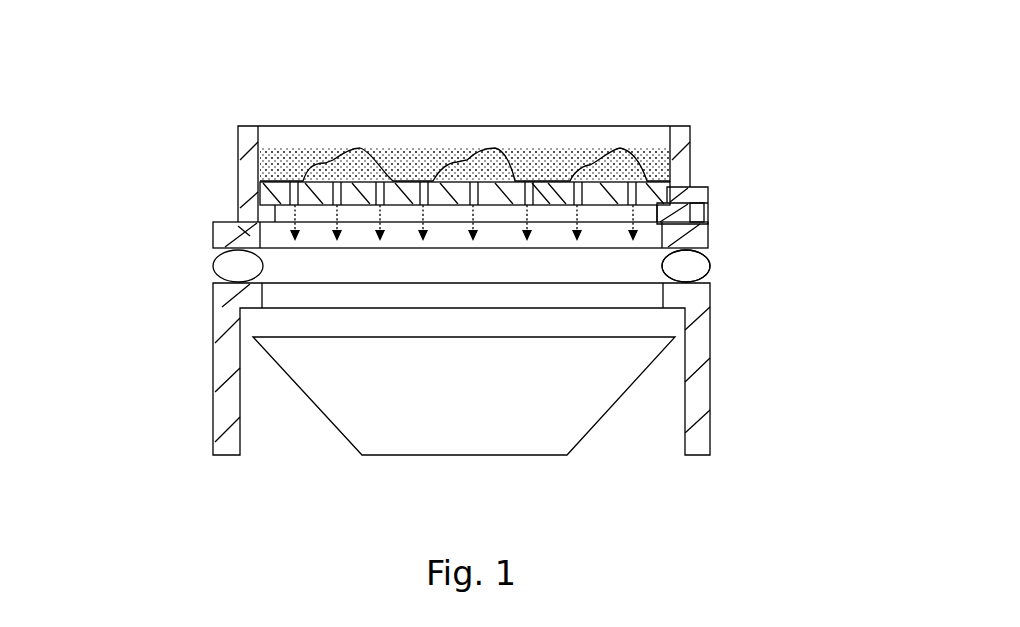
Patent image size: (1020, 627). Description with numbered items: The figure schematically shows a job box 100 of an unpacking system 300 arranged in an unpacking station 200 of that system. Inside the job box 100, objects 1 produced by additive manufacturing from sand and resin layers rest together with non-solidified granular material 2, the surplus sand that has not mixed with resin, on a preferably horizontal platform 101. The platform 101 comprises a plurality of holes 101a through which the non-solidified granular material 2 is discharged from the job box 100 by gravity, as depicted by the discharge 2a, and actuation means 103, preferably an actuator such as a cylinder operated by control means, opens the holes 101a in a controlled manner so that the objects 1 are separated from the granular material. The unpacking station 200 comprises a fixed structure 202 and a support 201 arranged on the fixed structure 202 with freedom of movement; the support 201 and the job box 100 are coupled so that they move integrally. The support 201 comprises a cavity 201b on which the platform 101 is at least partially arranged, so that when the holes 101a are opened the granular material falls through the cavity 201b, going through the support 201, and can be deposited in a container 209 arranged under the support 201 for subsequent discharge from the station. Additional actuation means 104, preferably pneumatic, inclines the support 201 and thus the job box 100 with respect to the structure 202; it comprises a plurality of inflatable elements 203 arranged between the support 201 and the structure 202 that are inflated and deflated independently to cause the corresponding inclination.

The system 300 is at (118, 73).
The job box 100 is at (208, 168).
The non-solidified granular material 2 is at (285, 162).
The objects 1 is at (333, 160).
The platform 101 is at (446, 181).
The holes 101a is at (541, 182).
The actuation means 103 is at (707, 193).
The discharge of non-solidified granular material 2a is at (707, 210).
The unpacking station 200 is at (203, 467).
The support 201 is at (707, 240).
The cavity 201b is at (273, 232).
The inflatable elements 203 is at (710, 268).
The additional actuation means 104 is at (686, 266).
The fixed structure 202 is at (693, 393).
The container 209 is at (422, 427).